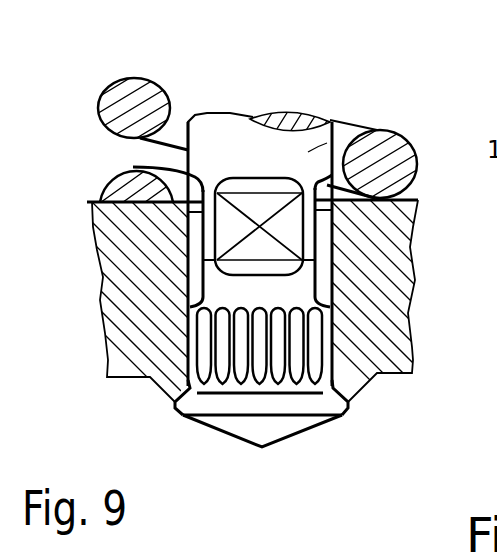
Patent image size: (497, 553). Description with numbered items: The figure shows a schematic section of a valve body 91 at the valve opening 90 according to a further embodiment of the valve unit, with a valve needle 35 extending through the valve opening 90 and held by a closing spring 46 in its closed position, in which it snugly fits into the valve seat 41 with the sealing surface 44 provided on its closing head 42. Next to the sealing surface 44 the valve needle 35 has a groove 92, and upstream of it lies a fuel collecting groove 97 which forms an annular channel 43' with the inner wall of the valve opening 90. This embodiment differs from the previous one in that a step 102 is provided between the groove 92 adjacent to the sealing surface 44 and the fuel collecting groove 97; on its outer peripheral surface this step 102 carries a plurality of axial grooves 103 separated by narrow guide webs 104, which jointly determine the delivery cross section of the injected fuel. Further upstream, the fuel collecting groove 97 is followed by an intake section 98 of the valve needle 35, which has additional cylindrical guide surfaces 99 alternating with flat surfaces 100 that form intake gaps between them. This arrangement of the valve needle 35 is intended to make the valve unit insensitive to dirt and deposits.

The closing spring 46 is at (170, 88).
The valve needle 35 is at (334, 116).
The intake section 98 is at (334, 226).
The flat surfaces 100 is at (125, 173).
The cylindrical guide surfaces 99 is at (242, 233).
The valve body 91 is at (142, 250).
The fuel collecting groove 97 is at (300, 282).
The valve opening 90 is at (195, 250).
The step 102 is at (342, 333).
The annular channel 43' is at (96, 368).
The guide webs 104 is at (222, 370).
The axial grooves 103 is at (336, 386).
The valve seat 41 is at (178, 426).
The groove 92 is at (250, 387).
The closing head 42 is at (266, 423).
The sealing surface 44 is at (301, 408).